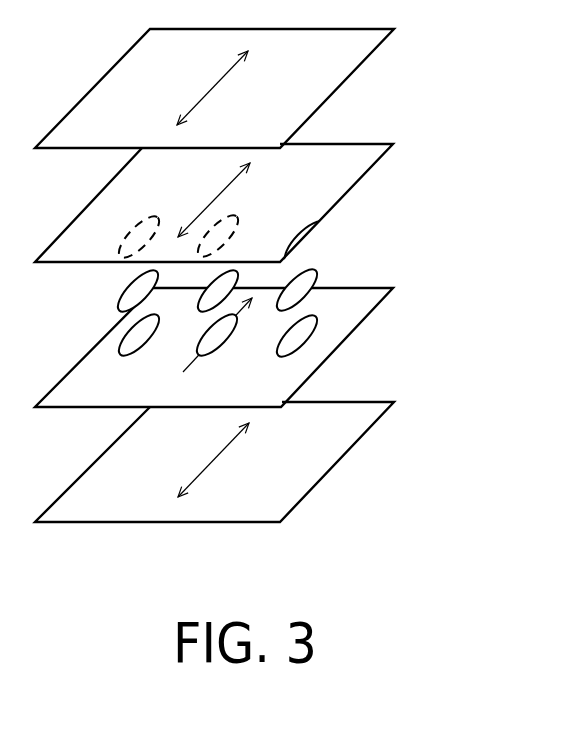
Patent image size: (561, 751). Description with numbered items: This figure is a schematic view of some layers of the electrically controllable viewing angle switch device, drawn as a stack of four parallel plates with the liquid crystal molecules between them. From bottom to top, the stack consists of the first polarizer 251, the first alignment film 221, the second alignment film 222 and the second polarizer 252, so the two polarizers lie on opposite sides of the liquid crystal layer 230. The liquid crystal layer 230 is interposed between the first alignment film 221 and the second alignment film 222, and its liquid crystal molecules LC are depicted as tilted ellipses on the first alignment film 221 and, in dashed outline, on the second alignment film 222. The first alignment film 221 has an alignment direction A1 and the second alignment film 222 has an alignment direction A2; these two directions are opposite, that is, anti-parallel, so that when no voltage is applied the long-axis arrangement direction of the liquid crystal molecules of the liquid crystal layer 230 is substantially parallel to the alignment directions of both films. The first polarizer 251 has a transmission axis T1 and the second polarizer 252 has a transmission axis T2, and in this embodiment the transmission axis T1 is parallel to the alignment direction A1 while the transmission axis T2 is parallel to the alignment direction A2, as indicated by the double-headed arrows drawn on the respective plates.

The second polarizer 252 is at (372, 28).
The second alignment film 222 is at (372, 146).
The first alignment film 221 is at (372, 287).
The first polarizer 251 is at (372, 402).
The liquid crystal layer 230 is at (317, 267).
The transmission axis of the second polarizer T2 is at (205, 96).
The transmission axis of the first polarizer T1 is at (203, 468).
The alignment direction of the second alignment film A2 is at (207, 208).
The alignment direction of the first alignment film A1 is at (195, 359).